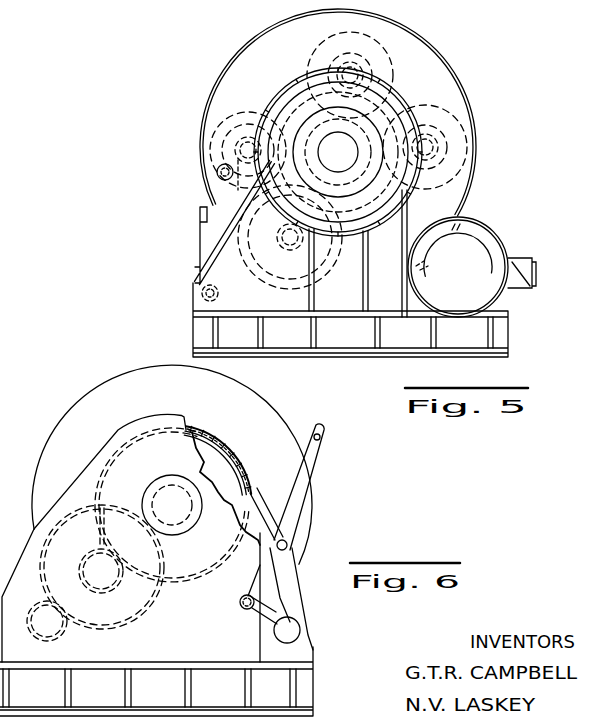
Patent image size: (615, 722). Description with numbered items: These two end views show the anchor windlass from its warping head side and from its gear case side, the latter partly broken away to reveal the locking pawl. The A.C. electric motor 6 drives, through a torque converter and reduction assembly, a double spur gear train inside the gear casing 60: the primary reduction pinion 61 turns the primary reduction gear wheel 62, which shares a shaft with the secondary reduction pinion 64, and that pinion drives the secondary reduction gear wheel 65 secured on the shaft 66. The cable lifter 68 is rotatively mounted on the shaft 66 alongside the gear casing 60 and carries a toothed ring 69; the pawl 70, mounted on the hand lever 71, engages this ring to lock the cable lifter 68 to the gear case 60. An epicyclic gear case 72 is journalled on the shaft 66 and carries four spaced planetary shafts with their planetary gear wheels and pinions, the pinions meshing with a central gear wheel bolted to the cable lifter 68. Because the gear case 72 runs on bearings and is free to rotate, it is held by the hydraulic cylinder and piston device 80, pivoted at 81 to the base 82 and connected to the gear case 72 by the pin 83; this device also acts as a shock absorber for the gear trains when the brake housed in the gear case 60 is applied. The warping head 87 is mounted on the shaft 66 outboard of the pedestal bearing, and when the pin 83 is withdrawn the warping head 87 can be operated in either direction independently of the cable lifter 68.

In FIG. 5, the A.C. electric motor 6 is at (486, 236).
In FIG. 5, the hydraulic cylinder and piston device 80 is at (191, 235).
In FIG. 5, the pivot 81 is at (194, 290).
In FIG. 5, the base 82 is at (200, 332).
In FIG. 6, the base 82 is at (300, 696).
In FIG. 5, the pin 83 is at (216, 169).
In FIG. 5, the warping head 87 is at (390, 102).
In FIG. 6, the gear casing 60 is at (84, 480).
In FIG. 6, the primary reduction pinion 61 is at (62, 636).
In FIG. 6, the primary reduction gear wheel 62 is at (148, 612).
In FIG. 6, the secondary reduction pinion 64 is at (86, 558).
In FIG. 6, the secondary reduction gear wheel 65 is at (120, 436).
In FIG. 6, the shaft 66 is at (184, 538).
In FIG. 6, the cable lifter 68 is at (212, 462).
In FIG. 6, the toothed ring 69 is at (246, 470).
In FIG. 6, the pawl 70 is at (266, 510).
In FIG. 6, the hand lever 71 is at (300, 521).
In FIG. 6, the epicyclic gear case 72 is at (112, 386).